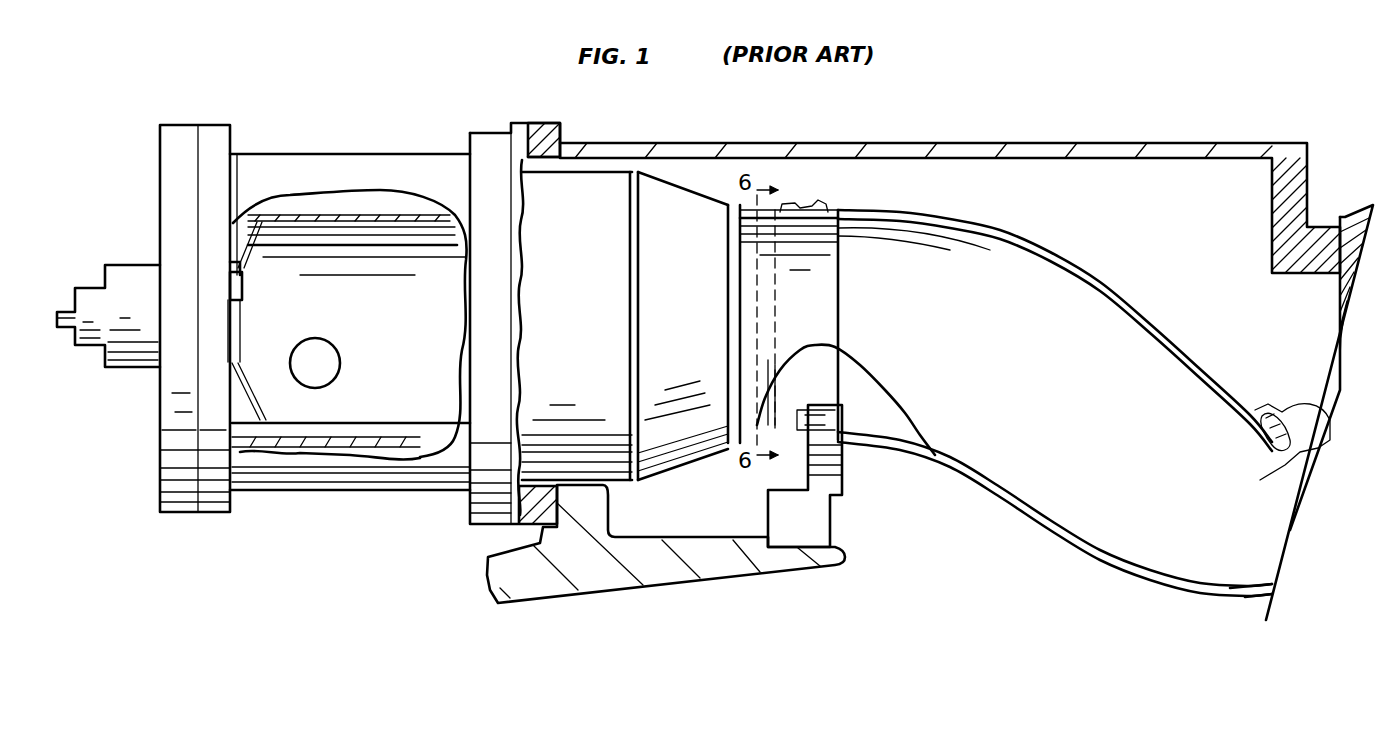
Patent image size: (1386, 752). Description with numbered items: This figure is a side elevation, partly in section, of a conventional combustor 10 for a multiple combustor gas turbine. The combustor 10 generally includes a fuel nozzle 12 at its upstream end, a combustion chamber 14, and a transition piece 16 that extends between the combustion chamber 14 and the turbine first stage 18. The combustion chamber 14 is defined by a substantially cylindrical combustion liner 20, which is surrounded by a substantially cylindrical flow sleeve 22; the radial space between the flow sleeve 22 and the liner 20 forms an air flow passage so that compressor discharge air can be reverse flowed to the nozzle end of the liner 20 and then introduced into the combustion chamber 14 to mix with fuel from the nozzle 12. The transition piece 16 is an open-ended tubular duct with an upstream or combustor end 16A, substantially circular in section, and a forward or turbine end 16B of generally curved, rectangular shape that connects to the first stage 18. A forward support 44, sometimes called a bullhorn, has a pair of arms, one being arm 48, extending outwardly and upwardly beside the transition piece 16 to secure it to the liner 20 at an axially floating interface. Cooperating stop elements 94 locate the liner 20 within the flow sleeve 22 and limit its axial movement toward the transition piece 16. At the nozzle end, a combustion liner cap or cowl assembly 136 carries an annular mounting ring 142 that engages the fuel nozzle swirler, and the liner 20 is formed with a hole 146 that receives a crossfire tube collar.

The combustor 10 is at (398, 124).
The fuel nozzle 12 is at (132, 268).
The combustion chamber 14 is at (375, 319).
The transition piece 16 is at (1030, 248).
The combustor end 16A is at (832, 212).
The turbine end 16B is at (1248, 598).
The turbine first stage 18 is at (1338, 298).
The combustion liner 20 is at (297, 218).
The flow sleeve 22 is at (597, 176).
The forward support 44 is at (846, 535).
The arm 48 is at (841, 485).
The cooperating stop elements 94 is at (283, 432).
The combustion liner cap or cowl assembly 136 is at (243, 242).
The annular mounting ring 142 is at (244, 276).
The hole 146 is at (336, 362).